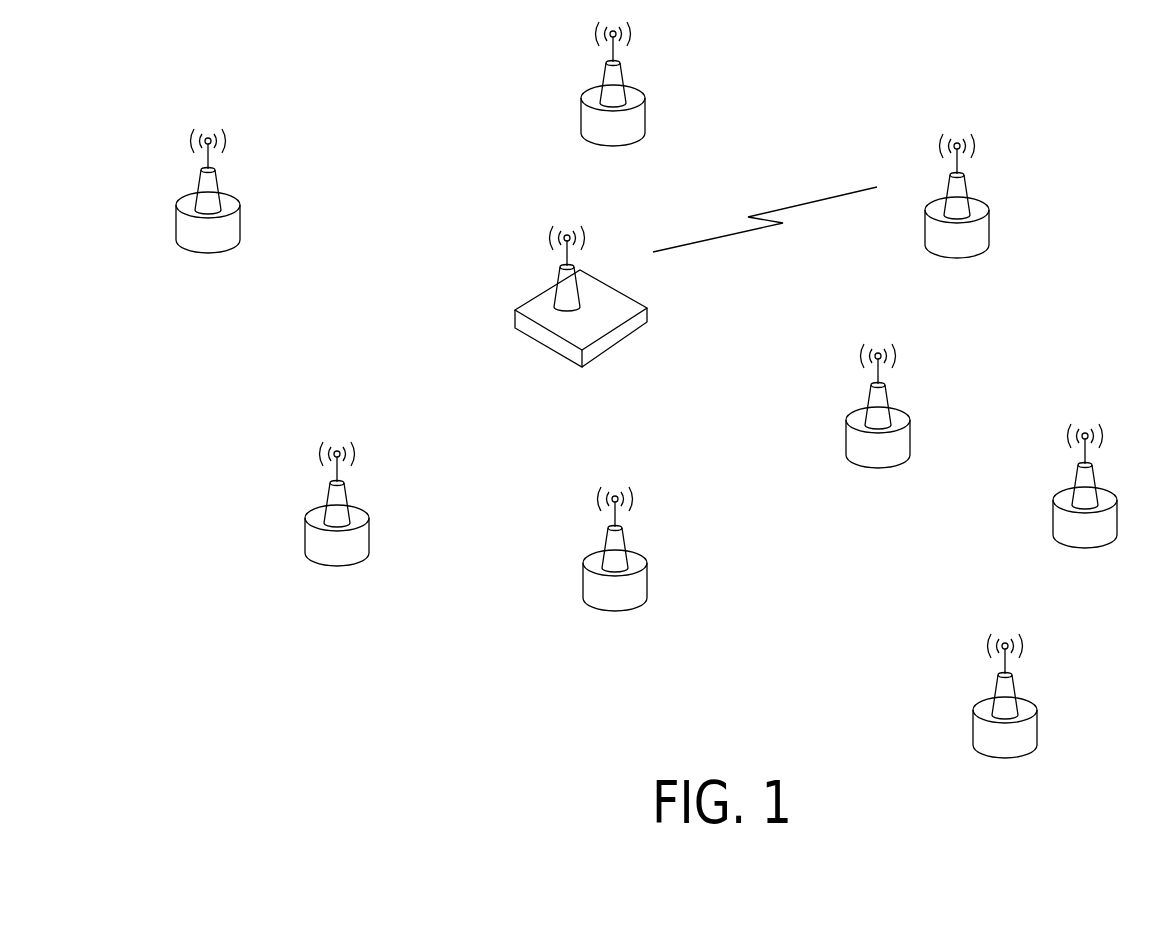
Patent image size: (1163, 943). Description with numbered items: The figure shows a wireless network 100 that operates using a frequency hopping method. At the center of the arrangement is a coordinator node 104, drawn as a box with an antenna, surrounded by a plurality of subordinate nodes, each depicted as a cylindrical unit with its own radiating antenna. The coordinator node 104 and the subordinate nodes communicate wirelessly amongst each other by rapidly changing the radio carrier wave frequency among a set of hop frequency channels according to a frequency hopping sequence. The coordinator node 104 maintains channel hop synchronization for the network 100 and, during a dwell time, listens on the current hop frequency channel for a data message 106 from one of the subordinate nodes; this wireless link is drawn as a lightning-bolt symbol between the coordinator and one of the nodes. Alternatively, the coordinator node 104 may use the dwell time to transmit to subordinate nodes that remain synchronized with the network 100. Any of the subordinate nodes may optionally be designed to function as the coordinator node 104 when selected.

The wireless network 100 is at (1097, 92).
The coordinator node 104 is at (618, 343).
The data message 106 is at (803, 203).